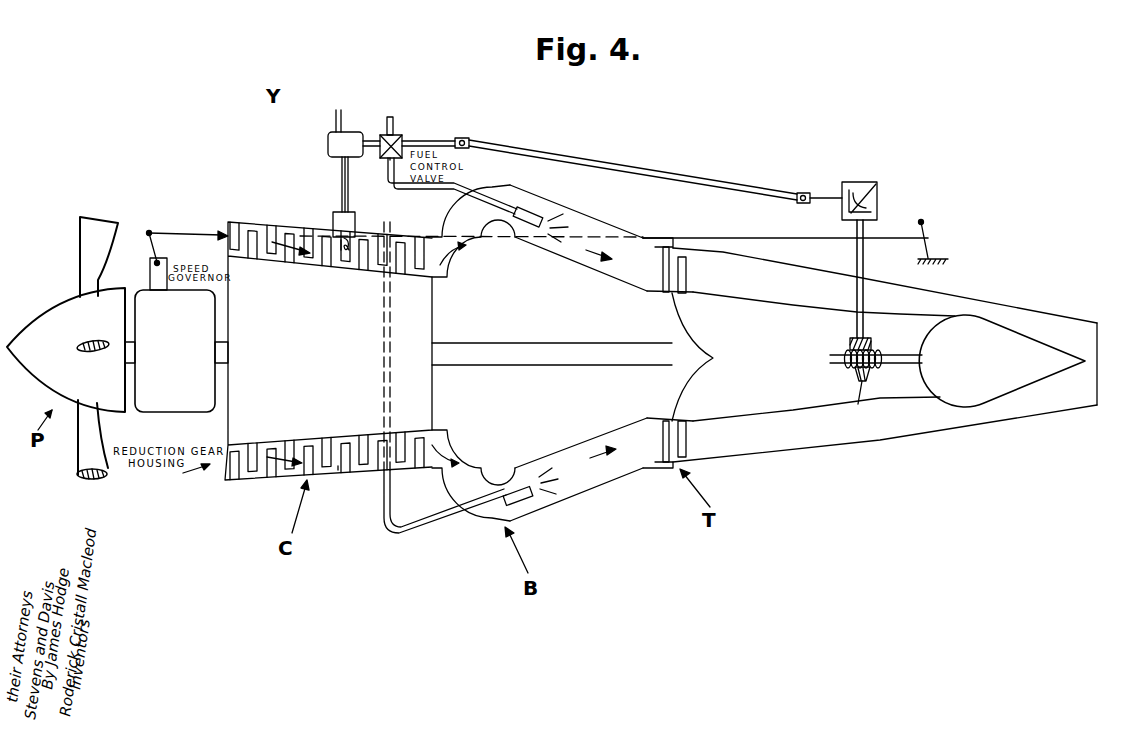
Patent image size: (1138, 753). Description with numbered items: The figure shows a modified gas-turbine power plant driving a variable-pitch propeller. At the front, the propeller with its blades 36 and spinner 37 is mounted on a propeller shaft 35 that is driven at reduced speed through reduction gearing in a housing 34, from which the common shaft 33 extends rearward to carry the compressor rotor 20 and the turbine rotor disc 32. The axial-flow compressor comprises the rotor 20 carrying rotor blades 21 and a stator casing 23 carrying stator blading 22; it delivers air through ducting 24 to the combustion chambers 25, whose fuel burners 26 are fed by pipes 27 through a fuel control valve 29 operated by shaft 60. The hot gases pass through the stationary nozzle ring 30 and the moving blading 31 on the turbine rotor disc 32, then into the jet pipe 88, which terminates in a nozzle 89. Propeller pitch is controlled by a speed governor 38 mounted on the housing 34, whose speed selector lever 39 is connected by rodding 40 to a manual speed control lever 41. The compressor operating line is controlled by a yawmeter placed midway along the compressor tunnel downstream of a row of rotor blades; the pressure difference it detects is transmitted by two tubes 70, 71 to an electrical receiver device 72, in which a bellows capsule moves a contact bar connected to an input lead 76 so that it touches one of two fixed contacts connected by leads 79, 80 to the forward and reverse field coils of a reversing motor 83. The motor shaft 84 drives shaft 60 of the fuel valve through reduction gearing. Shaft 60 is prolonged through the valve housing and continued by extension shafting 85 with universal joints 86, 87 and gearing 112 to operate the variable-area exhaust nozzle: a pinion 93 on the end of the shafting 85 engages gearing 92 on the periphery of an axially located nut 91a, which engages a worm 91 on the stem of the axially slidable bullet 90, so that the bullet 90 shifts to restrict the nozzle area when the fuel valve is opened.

The rotor 20 is at (432, 337).
The rotor blades 21 is at (280, 452).
The stator blading 22 is at (373, 262).
The stator casing 23 is at (338, 468).
The ducting 24 is at (460, 268).
The combustion chambers 25 is at (590, 263).
The fuel burners 26 is at (530, 224).
The pipes 27 is at (420, 189).
The fuel control valve 29 is at (402, 148).
The stationary nozzle ring 30 is at (666, 268).
The moving blading 31 is at (684, 278).
The turbine rotor disc 32 is at (680, 337).
The common shaft 33 is at (228, 351).
The housing 34 is at (198, 412).
The propeller shaft 35 is at (132, 365).
The blades 36 is at (80, 240).
The spinner 37 is at (30, 375).
The speed governor 38 is at (150, 275).
The speed selector lever 39 is at (150, 245).
The rodding 40 is at (193, 232).
The manual speed control lever 41 is at (930, 233).
The shaft 60 is at (391, 117).
The tube 70 is at (343, 252).
The tube 71 is at (337, 250).
The electrical receiver device 72 is at (333, 214).
The input lead 76 is at (348, 170).
The lead 79 is at (349, 195).
The lead 80 is at (341, 173).
The reversing motor 83 is at (328, 143).
The shaft 84 is at (376, 138).
The extension shafting 85 is at (655, 176).
The universal joint 86 is at (470, 142).
The universal joint 87 is at (803, 193).
The jet pipe 88 is at (898, 427).
The nozzle 89 is at (1098, 392).
The bullet 90 is at (983, 407).
The worm 91 is at (875, 357).
The nut 91a is at (868, 372).
The gearing 92 is at (866, 384).
The pinion 93 is at (853, 345).
The gearing 112 is at (877, 184).